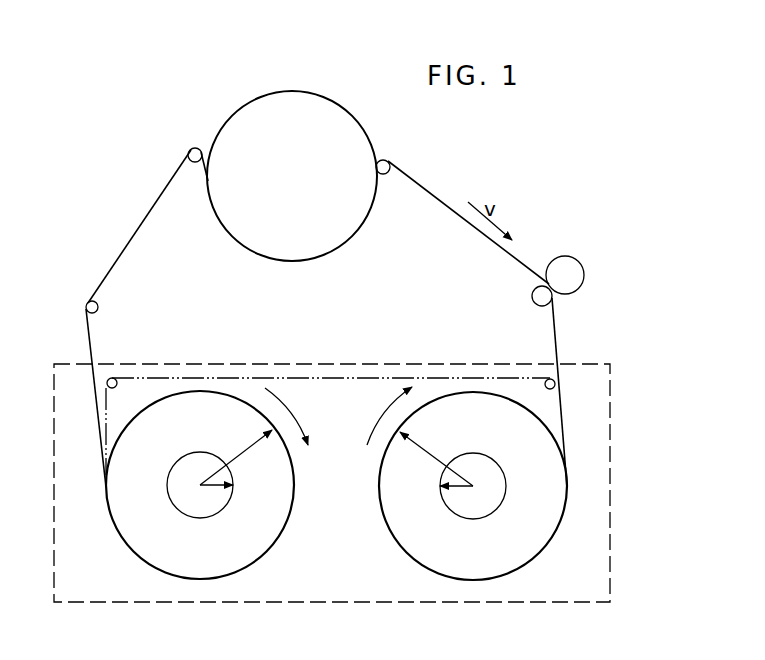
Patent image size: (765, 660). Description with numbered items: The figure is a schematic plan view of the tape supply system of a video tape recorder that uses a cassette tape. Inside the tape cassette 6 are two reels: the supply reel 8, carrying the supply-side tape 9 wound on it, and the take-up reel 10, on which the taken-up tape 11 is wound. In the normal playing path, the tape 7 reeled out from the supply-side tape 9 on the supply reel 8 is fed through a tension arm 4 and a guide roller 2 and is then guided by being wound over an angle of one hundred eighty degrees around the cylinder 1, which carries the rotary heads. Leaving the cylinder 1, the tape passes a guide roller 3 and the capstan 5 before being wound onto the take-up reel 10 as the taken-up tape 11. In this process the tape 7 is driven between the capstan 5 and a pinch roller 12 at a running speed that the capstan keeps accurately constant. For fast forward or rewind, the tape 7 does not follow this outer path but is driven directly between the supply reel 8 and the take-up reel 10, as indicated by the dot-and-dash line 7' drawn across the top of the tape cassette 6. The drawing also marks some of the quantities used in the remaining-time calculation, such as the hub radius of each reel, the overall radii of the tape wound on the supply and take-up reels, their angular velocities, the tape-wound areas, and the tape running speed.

The cylinder 1 is at (353, 132).
The guide roller 2 is at (193, 150).
The guide roller 3 is at (390, 162).
The tension arm 4 is at (99, 306).
The capstan 5 is at (531, 297).
The tape cassette 6 is at (612, 412).
The tape 7 is at (326, 318).
The dot-and-dash line 7' is at (330, 401).
The supply reel 8 is at (168, 468).
The supply-side tape 9 is at (257, 558).
The take-up reel 10 is at (508, 477).
The take-up reel S2 11 is at (412, 562).
The pinch roller 12 is at (568, 262).